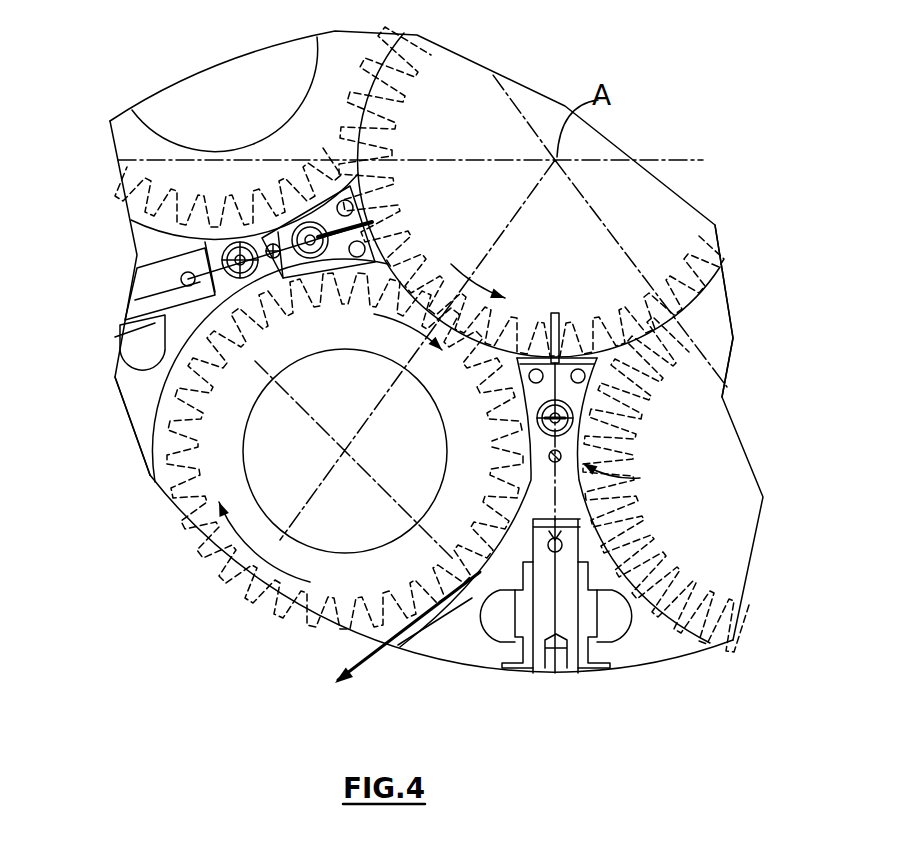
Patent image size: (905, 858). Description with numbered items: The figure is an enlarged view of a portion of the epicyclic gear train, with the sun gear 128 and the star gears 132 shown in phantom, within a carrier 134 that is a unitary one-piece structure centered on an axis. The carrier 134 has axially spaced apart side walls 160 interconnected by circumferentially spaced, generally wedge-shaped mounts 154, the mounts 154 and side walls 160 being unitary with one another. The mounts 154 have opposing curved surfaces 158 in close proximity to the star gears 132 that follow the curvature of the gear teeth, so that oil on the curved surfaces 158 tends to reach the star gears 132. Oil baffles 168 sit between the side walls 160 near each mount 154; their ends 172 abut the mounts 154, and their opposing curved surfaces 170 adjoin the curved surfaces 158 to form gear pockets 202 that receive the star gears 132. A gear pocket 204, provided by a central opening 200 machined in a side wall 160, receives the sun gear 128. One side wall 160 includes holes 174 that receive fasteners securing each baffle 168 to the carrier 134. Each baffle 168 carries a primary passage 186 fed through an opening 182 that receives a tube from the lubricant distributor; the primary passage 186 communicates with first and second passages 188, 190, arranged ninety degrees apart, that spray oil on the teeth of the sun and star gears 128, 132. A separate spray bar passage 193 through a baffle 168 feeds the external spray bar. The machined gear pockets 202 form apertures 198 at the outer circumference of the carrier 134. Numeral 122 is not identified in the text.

The housing 122 is at (675, 651).
The sun gear 128 is at (742, 300).
The star gears 132 is at (236, 610).
The carrier 134 is at (430, 656).
The mounts 154 is at (500, 670).
The curved surfaces 158 is at (488, 538).
The side walls 160 is at (364, 630).
The oil baffles 168 is at (562, 457).
The curved surfaces 170 is at (526, 392).
The ends 172 is at (617, 518).
The holes 174 is at (542, 358).
The openings 182 is at (528, 378).
The primary passage 186 is at (305, 232).
The first passage 188 is at (556, 358).
The second passage 190 is at (541, 420).
The spray bar passage 193 is at (225, 250).
The apertures 198 is at (148, 478).
The central opening 200 is at (378, 224).
The gear pockets 202 is at (206, 472).
The gear pocket 204 is at (497, 233).